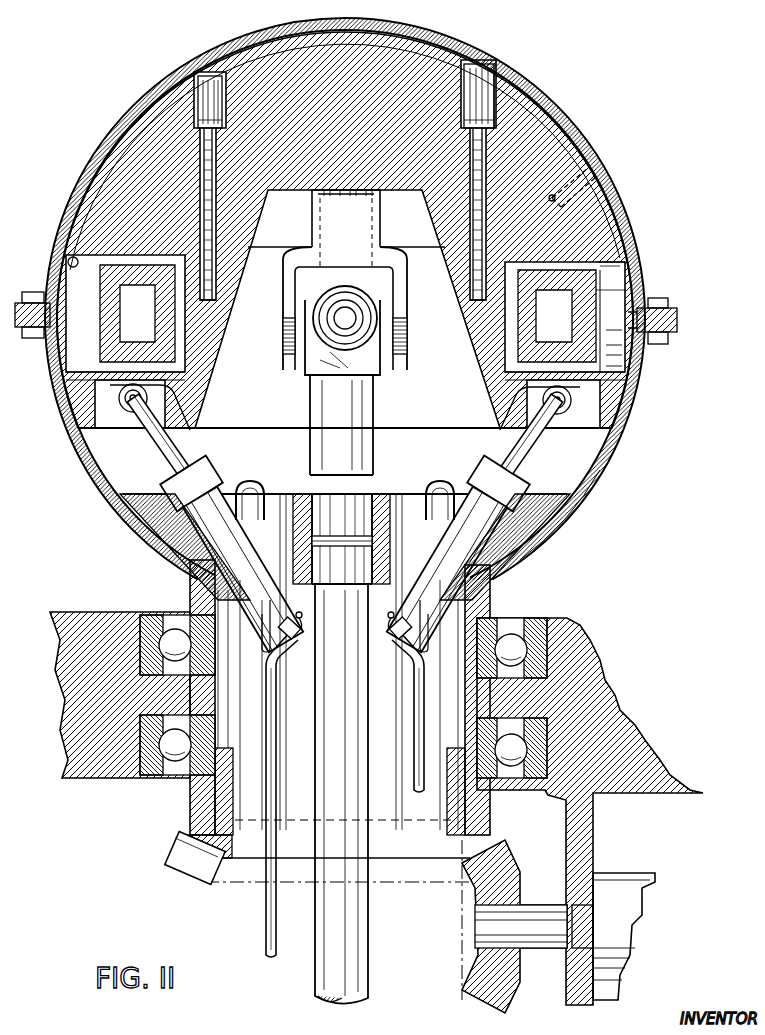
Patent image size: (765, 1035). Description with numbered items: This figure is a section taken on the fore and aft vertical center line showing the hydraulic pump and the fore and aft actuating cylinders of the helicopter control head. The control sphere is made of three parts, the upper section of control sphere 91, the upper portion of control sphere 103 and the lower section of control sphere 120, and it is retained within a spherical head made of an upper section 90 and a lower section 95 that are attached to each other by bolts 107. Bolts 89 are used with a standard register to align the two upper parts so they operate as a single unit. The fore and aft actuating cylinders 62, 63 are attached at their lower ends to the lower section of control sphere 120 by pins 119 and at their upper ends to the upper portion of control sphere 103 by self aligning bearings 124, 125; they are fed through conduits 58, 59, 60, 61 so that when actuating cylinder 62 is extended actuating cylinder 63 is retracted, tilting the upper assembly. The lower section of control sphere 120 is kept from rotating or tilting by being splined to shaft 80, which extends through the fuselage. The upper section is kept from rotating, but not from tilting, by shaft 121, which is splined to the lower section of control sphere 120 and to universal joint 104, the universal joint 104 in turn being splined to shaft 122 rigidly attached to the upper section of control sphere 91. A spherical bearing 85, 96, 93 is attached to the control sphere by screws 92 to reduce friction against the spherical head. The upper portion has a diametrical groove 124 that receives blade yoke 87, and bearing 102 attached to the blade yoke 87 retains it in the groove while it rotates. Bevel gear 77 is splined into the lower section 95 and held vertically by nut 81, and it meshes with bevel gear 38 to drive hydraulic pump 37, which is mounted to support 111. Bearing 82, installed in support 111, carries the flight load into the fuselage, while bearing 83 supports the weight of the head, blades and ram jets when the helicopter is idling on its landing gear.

The hydraulic pump 37 is at (609, 870).
The bevel gear 38 is at (520, 885).
The conduit 58 is at (252, 480).
The conduit 59 is at (268, 730).
The conduit 60 is at (420, 482).
The conduit 61 is at (410, 704).
The actuating cylinder 62 is at (190, 556).
The actuating cylinder 63 is at (476, 478).
The bevel gear 77 is at (185, 862).
The shaft 80 is at (364, 946).
The nut 81 is at (178, 800).
The bearing 82 is at (560, 740).
The bearing 83 is at (545, 640).
The spherical bearing 85 is at (565, 405).
The blade yoke 87 is at (100, 344).
The bolt 89 is at (155, 113).
The upper section of spherical head 90 is at (650, 152).
The upper section of control sphere 91 is at (525, 82).
The screw 92 is at (586, 160).
The spherical bearing 93 is at (620, 222).
The lower section of spherical head 95 is at (600, 478).
The spherical bearing 96 is at (550, 524).
The bearing 102 is at (606, 342).
The upper portion of control sphere 103 is at (460, 346).
The universal joint 104 is at (283, 345).
The bolt 107 is at (660, 304).
The support 111 is at (88, 786).
The pin 119 is at (296, 650).
The lower section of control sphere 120 is at (540, 492).
The shaft 121 is at (310, 492).
The shaft 122 is at (380, 202).
The diametrical groove 124 is at (71, 261).
The self aligning bearing 125 is at (128, 418).